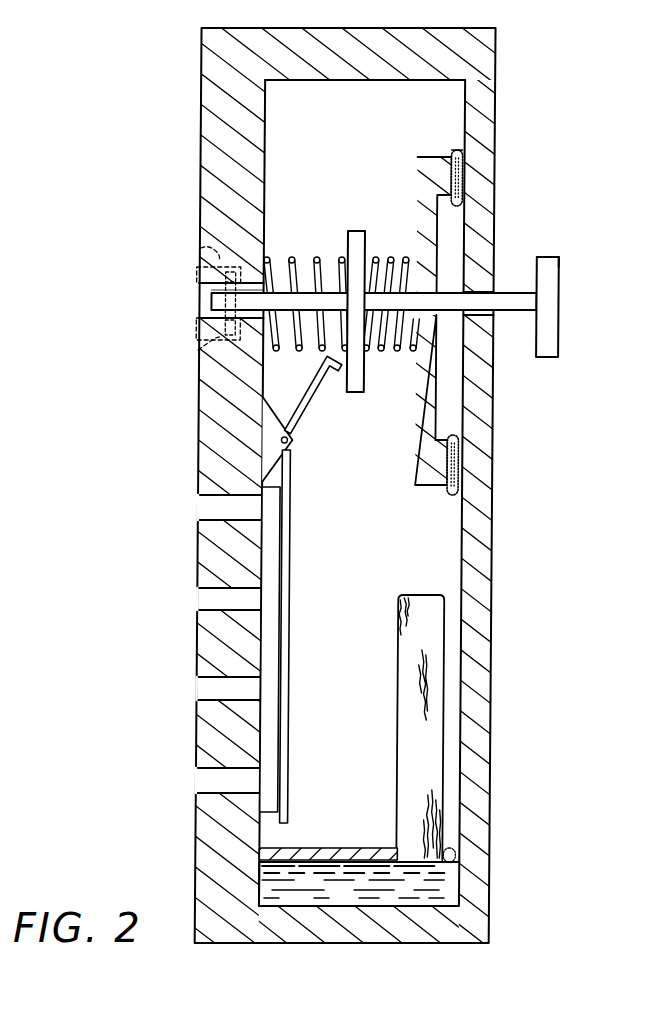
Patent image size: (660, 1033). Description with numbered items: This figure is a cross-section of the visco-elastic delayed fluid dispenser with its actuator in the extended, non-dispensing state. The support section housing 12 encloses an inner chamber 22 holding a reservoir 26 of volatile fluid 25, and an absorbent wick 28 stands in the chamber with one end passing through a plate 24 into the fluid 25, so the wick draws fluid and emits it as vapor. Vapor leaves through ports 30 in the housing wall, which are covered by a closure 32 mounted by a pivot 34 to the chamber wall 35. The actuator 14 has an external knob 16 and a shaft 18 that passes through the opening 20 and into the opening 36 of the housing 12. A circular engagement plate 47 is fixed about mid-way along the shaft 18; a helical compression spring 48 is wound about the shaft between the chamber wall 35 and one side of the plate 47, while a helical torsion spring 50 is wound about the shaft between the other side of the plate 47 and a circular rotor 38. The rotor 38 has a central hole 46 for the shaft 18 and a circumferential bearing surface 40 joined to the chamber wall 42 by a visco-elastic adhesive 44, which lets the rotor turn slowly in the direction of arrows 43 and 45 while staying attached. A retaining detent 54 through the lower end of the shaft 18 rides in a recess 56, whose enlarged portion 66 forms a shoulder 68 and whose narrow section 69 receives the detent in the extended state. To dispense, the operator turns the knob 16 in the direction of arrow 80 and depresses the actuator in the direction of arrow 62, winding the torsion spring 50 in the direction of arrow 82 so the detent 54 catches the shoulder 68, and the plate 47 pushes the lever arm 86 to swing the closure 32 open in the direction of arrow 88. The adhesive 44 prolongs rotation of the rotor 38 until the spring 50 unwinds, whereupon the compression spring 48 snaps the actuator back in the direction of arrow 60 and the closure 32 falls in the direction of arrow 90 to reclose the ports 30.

The support section housing 12 is at (497, 772).
The actuator 14 is at (553, 357).
The external knob 16 is at (562, 265).
The shaft 18 is at (508, 312).
The opening 20 is at (500, 293).
The inner chamber 22 is at (432, 563).
The plate 24 is at (460, 856).
The volatile fluid 25 is at (268, 890).
The reservoir 26 is at (433, 893).
The absorbent wick 28 is at (422, 594).
The ports 30 is at (203, 512).
The closure 32 is at (295, 500).
The pivot 34 is at (291, 440).
The chamber wall 35 is at (306, 363).
The opening 36 is at (266, 290).
The circular rotor 38 is at (415, 177).
The circumferential bearing surface 40 is at (448, 150).
The chamber wall 42 is at (464, 106).
The arrow 43 is at (412, 510).
The visco-elastic adhesive 44 is at (462, 172).
The arrow 45 is at (432, 508).
The central hole 46 is at (440, 318).
The circular engagement plate 47 is at (355, 230).
The helical compression spring 48 is at (332, 236).
The helical torsion spring 50 is at (390, 255).
The retaining detent 54 is at (198, 270).
The recess 56 is at (200, 350).
The arrow 60 is at (610, 205).
The arrow 62 is at (550, 225).
The enlarged portion 66 is at (198, 327).
The shoulder 68 is at (226, 280).
The narrow section 69 is at (202, 248).
The arrow 80 is at (590, 262).
The arrow 82 is at (388, 361).
The lever arm 86 is at (315, 412).
The arrow 88 is at (345, 700).
The arrow 90 is at (308, 740).